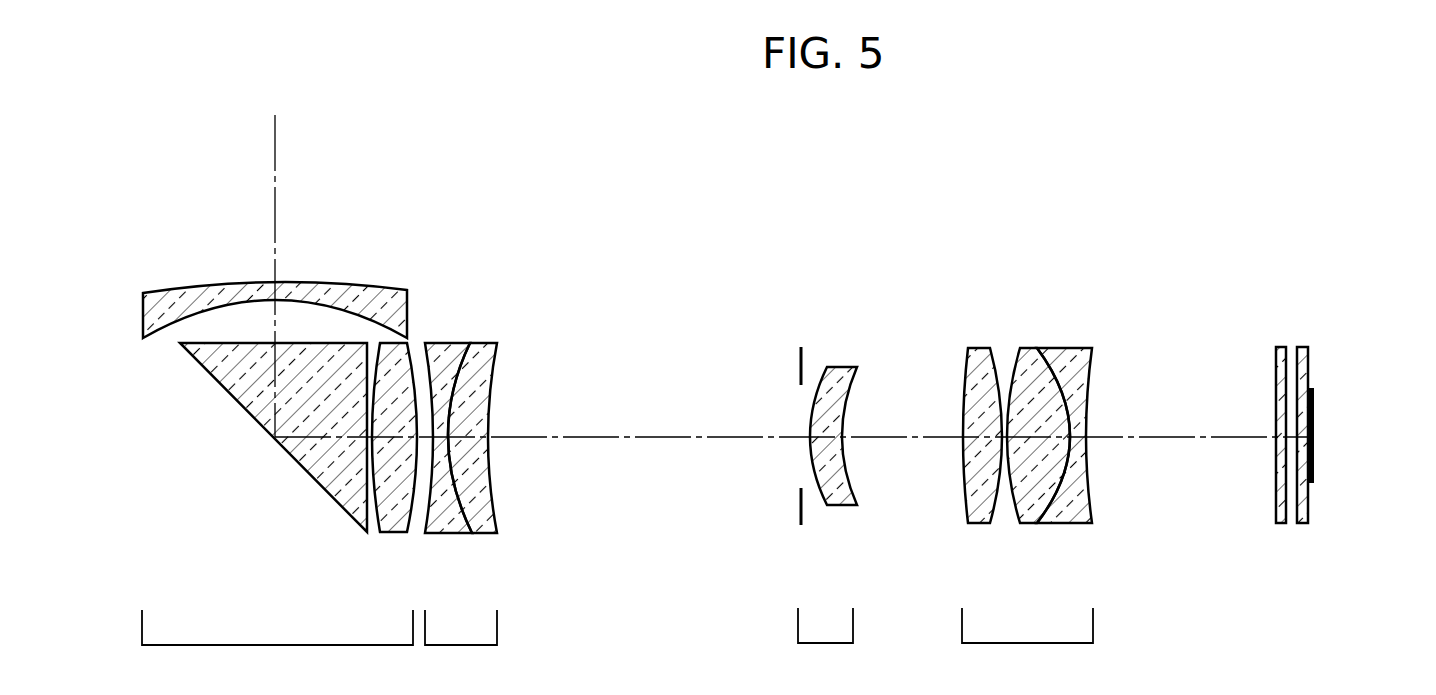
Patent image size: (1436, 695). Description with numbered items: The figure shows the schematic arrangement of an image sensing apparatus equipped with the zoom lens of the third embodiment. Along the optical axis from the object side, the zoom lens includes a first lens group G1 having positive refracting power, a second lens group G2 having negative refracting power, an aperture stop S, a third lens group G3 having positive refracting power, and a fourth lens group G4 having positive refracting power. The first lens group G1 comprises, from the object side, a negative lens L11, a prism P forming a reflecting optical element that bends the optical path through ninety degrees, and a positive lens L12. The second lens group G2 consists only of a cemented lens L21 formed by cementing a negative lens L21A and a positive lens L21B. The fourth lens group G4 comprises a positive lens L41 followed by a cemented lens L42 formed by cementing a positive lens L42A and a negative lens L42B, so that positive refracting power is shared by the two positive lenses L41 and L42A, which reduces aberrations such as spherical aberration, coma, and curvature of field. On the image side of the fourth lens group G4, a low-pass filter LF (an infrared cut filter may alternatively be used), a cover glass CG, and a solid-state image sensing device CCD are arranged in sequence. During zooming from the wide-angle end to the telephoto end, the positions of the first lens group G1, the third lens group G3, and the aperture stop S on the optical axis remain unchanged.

The negative lens L11 is at (143, 317).
The prism P is at (218, 382).
The positive lens L12 is at (395, 527).
The cemented lens L21 is at (514, 376).
The negative lens L21A is at (448, 357).
The positive lens L21B is at (478, 343).
The aperture stop S is at (805, 360).
The positive lens L41 is at (972, 348).
The cemented lens L42 is at (1078, 371).
The positive lens L42A is at (1030, 348).
The negative lens L42B is at (1098, 395).
The low-pass filter LF is at (1280, 347).
The cover glass CG is at (1303, 347).
The solid-state image sensing device CCD is at (1315, 410).
The first lens group G1 is at (277, 649).
The second lens group G2 is at (461, 649).
The third lens group G3 is at (825, 648).
The fourth lens group G4 is at (1027, 648).